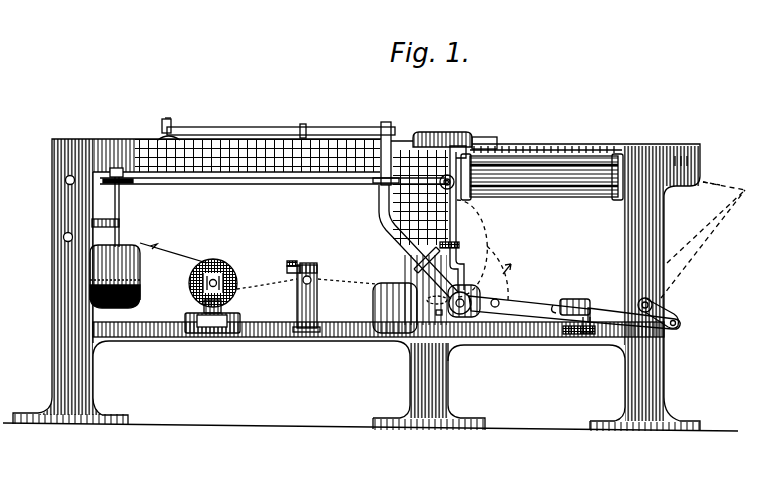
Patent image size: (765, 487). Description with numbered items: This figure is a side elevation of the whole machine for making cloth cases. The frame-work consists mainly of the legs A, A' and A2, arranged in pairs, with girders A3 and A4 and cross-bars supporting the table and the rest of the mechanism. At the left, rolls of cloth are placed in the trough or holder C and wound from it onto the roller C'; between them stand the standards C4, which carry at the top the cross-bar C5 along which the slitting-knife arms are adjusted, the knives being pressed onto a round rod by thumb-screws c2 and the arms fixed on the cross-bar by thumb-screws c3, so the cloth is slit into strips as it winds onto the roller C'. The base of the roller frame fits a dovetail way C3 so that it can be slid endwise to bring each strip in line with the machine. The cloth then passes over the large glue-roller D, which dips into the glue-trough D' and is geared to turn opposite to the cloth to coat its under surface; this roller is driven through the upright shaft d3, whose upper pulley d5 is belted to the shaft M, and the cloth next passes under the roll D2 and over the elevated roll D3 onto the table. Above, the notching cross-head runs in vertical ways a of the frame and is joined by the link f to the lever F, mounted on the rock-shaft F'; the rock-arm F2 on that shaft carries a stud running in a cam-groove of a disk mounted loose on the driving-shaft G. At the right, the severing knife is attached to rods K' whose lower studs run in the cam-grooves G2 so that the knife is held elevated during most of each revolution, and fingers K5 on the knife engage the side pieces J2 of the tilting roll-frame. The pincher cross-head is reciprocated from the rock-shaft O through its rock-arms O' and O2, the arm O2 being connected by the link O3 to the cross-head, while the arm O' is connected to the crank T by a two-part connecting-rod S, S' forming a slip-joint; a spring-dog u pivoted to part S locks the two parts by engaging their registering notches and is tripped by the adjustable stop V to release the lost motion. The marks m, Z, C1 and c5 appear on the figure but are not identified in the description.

The legs A is at (370, 285).
The legs A' is at (276, 379).
The legs A2 is at (626, 392).
The girder A3 is at (263, 338).
The girder A4 is at (263, 174).
The vertical ways a is at (163, 133).
The link f is at (170, 120).
The lever F is at (281, 126).
The rock-shaft F' is at (388, 145).
The rock-arm F2 is at (401, 236).
The shaft M is at (446, 176).
The pivot pin m is at (443, 186).
The side pieces J2 is at (450, 132).
The fingers K5 is at (480, 136).
The rods K' is at (475, 204).
The roller Z is at (573, 155).
The cam-grooves G2 is at (484, 250).
The driving-shaft G is at (458, 318).
The crank T is at (466, 303).
The connecting-rod part S' is at (529, 302).
The connecting-rod part S is at (634, 304).
The spring-dog u is at (591, 352).
The adjustable stop V is at (583, 336).
The rock-shaft O is at (663, 300).
The rock-arm O' is at (673, 313).
The rock-arm O2 is at (700, 256).
The rod or link O3 is at (712, 187).
The roll D3 is at (65, 180).
The roll D2 is at (63, 237).
The upright shaft d3 is at (120, 211).
The pulley d5 is at (130, 184).
The glue roller D is at (149, 241).
The glue trough D' is at (126, 276).
The roller C' is at (222, 283).
The hub C1 is at (223, 311).
The way C3 is at (241, 318).
The standards C4 is at (317, 303).
The cross-bar C5 is at (312, 281).
The thumb-screws c2 is at (309, 263).
The thumb-screws c3 is at (296, 264).
The lug c5 is at (291, 261).
The trough or holder C is at (385, 308).